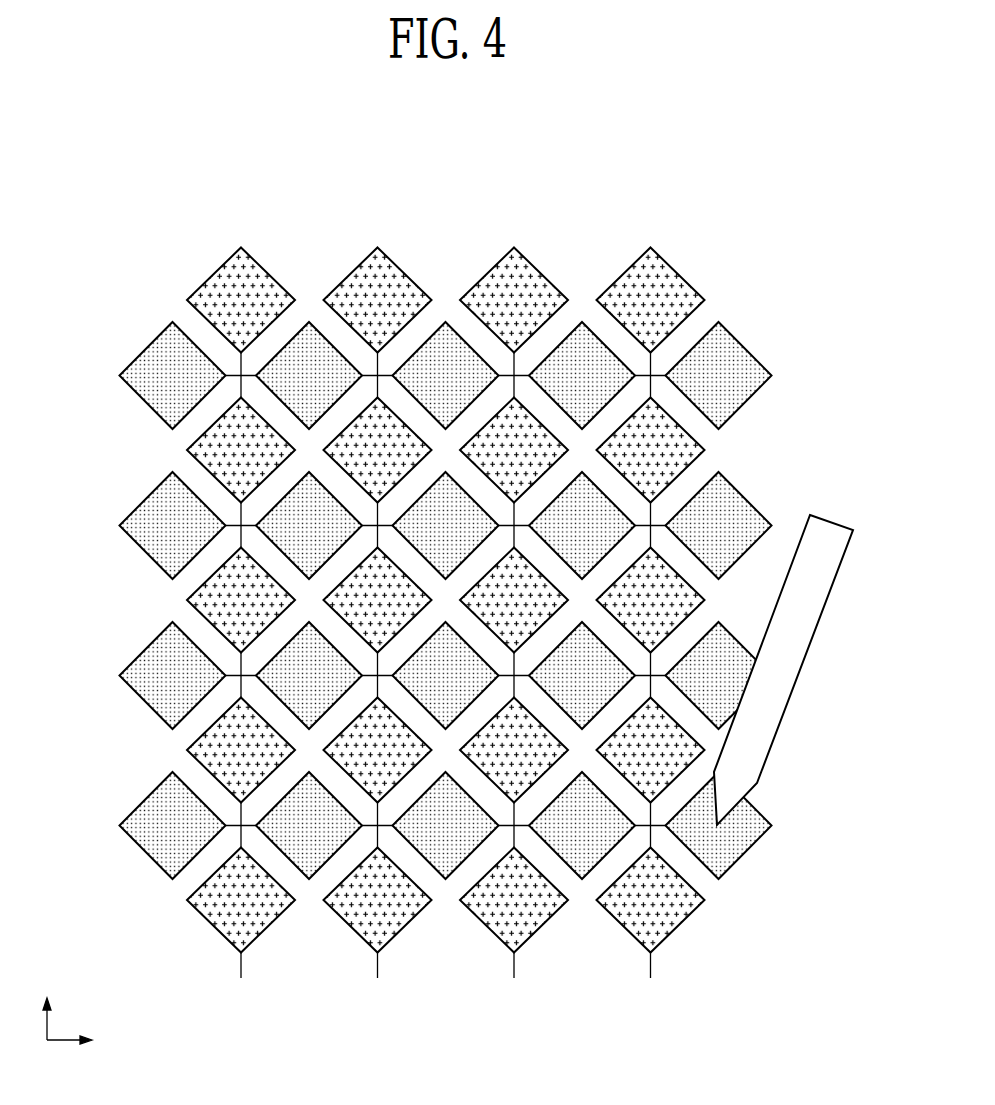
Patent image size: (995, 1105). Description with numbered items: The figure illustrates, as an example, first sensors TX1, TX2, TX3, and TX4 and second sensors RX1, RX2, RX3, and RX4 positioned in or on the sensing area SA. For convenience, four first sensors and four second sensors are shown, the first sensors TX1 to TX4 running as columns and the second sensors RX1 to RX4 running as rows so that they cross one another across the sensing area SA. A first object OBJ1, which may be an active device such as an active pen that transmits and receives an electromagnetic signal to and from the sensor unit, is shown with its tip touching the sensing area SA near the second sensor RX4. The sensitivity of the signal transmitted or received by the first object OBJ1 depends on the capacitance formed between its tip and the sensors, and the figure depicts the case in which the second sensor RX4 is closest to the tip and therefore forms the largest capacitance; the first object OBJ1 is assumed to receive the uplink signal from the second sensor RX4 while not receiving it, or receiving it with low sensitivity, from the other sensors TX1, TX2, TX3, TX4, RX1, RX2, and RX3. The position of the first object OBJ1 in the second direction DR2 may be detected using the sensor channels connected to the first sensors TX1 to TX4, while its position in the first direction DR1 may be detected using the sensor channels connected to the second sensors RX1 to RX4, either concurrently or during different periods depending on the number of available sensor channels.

The first sensor TX1 is at (241, 248).
The first sensor TX2 is at (378, 248).
The first sensor TX3 is at (514, 248).
The first sensor TX4 is at (650, 248).
The second sensor RX1 is at (120, 376).
The second sensor RX2 is at (120, 526).
The second sensor RX3 is at (120, 676).
The second sensor RX4 is at (120, 826).
The sensing area SA is at (732, 167).
The first object OBJ1 is at (833, 521).
The first direction DR1 is at (49, 1004).
The second direction DR2 is at (89, 1043).